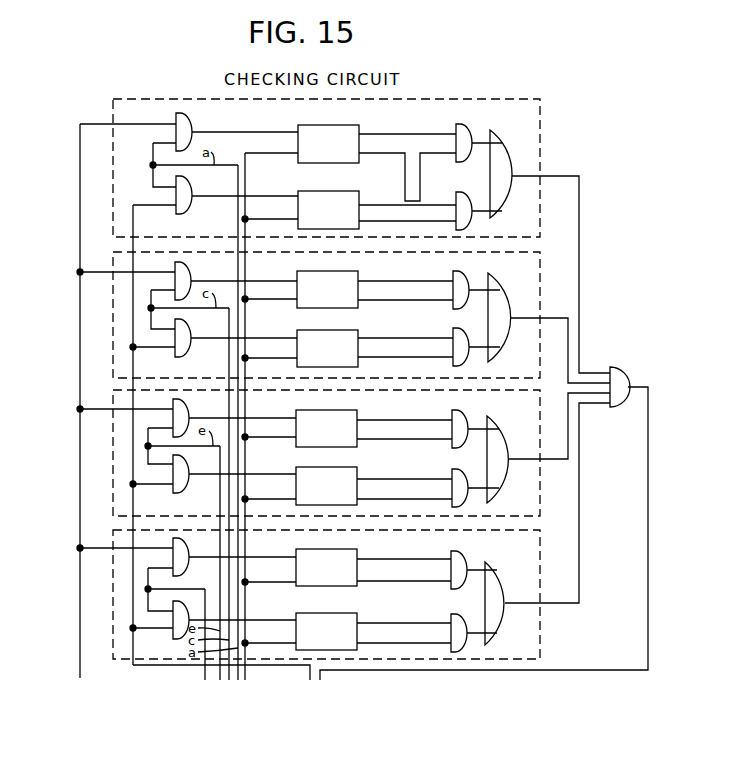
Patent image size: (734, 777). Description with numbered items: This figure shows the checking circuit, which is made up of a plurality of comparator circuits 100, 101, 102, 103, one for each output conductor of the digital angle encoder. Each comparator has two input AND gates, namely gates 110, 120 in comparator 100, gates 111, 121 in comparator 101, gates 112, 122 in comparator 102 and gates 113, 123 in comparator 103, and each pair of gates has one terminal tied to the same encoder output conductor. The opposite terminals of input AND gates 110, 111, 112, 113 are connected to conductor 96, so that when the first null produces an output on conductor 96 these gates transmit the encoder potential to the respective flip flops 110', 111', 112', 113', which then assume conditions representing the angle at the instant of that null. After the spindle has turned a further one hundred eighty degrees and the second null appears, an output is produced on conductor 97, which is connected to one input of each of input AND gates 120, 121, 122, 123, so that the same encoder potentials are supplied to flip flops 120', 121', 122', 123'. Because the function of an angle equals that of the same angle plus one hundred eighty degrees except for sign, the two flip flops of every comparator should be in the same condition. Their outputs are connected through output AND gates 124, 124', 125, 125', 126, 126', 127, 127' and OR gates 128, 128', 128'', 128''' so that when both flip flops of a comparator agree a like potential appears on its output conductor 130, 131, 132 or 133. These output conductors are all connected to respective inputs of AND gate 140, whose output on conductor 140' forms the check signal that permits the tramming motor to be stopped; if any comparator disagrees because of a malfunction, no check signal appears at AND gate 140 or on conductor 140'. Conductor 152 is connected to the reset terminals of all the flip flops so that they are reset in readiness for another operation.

The conductor 96 is at (79, 505).
The conductor 97 is at (133, 665).
The comparator circuit 100 is at (113, 160).
The comparator circuit 101 is at (113, 301).
The comparator circuit 102 is at (113, 446).
The comparator circuit 103 is at (113, 605).
The input AND gate 110 is at (200, 128).
The flip flop 110' is at (345, 134).
The input AND gate 111 is at (198, 278).
The flip flop 111' is at (345, 281).
The input AND gate 112 is at (196, 418).
The flip flop 112' is at (344, 420).
The input AND gate 113 is at (192, 554).
The flip flop 113' is at (344, 560).
The input AND gate 120 is at (200, 192).
The flip flop 120' is at (345, 201).
The input AND gate 121 is at (198, 335).
The flip flop 121' is at (345, 340).
The input AND gate 122 is at (193, 471).
The flip flop 122' is at (344, 477).
The input AND gate 123 is at (189, 616).
The flip flop 123' is at (344, 624).
The output AND gate 124 is at (474, 134).
The output AND gate 124' is at (472, 201).
The output AND gate 125 is at (472, 283).
The output AND gate 125' is at (469, 340).
The output AND gate 126 is at (471, 421).
The output AND gate 126' is at (467, 479).
The output AND gate 127 is at (468, 562).
The output AND gate 127' is at (463, 624).
The OR gate 128 is at (510, 171).
The OR gate 128' is at (512, 317).
The OR gate 128'' is at (512, 455).
The OR gate 128''' is at (510, 601).
The output conductor 130 is at (535, 177).
The output conductor 131 is at (528, 318).
The output conductor 132 is at (522, 460).
The output conductor 133 is at (522, 607).
The AND gate 140 is at (635, 382).
The conductor 140' is at (505, 533).
The conductor 152 is at (245, 615).